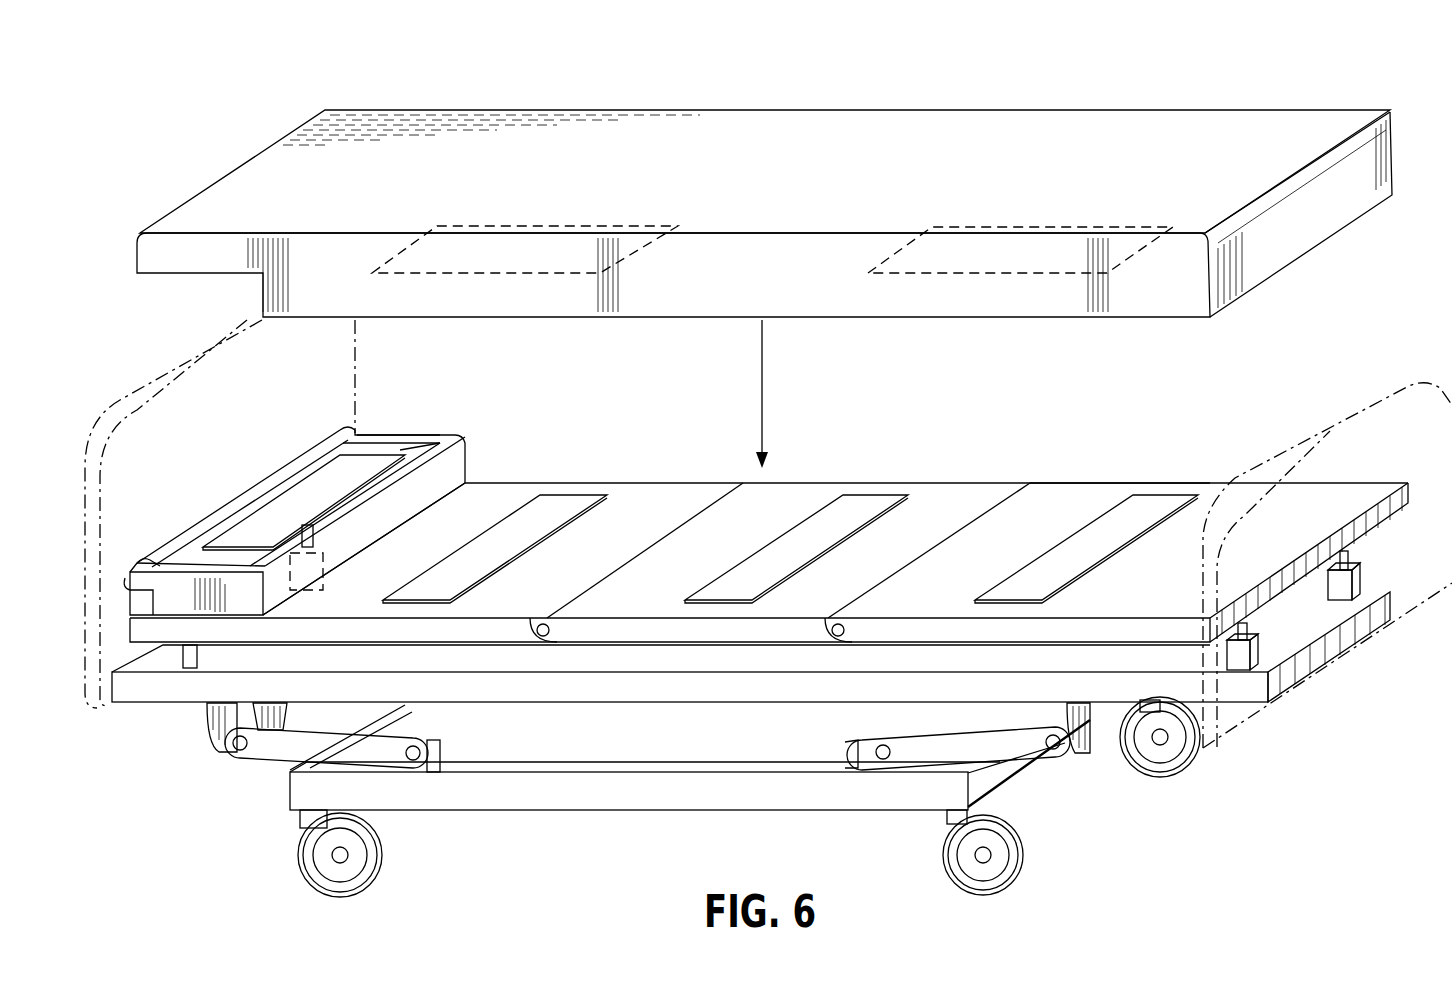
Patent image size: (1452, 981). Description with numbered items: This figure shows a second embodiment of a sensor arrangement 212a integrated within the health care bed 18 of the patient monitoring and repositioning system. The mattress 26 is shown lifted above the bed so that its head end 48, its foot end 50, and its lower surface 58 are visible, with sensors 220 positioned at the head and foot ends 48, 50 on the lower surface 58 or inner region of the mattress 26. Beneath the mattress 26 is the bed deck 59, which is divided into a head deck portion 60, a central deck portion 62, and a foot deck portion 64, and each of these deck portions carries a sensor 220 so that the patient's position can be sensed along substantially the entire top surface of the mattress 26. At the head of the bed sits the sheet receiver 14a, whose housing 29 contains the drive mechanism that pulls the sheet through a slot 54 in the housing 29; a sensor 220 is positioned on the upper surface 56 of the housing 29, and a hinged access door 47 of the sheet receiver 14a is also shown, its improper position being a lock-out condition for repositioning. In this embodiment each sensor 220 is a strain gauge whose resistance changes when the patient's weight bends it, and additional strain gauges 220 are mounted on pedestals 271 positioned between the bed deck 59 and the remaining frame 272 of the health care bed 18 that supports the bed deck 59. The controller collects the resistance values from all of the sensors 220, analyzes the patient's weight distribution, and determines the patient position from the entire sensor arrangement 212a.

The sheet receiver 14a is at (252, 449).
The health care bed 18 is at (1150, 802).
The mattress 26 is at (811, 176).
The housing 29 is at (466, 460).
The hinged access door 47 is at (420, 447).
The head end 48 is at (262, 128).
The foot end 50 is at (1352, 100).
The slot 54 is at (127, 583).
The upper surface 56 is at (378, 438).
The lower surface 58 is at (710, 318).
The bed deck 59 is at (974, 482).
The head deck portion 60 is at (472, 633).
The central deck portion 62 is at (637, 632).
The foot deck portion 64 is at (862, 637).
The sensor arrangement 212a is at (1363, 299).
The strain gauges 220 is at (525, 273).
The pedestals 271 is at (290, 568).
The remaining frame 272 is at (1330, 652).